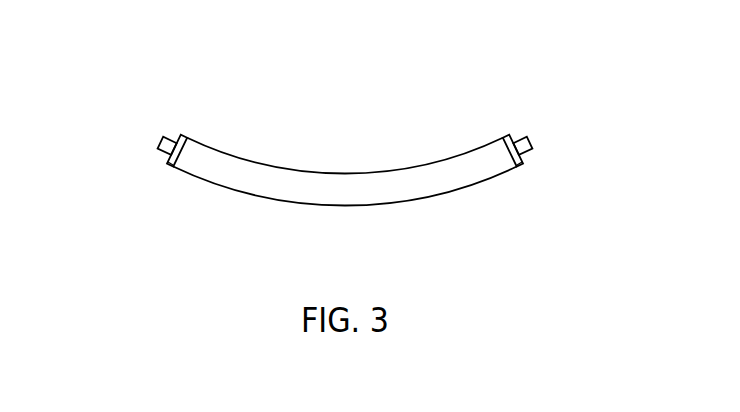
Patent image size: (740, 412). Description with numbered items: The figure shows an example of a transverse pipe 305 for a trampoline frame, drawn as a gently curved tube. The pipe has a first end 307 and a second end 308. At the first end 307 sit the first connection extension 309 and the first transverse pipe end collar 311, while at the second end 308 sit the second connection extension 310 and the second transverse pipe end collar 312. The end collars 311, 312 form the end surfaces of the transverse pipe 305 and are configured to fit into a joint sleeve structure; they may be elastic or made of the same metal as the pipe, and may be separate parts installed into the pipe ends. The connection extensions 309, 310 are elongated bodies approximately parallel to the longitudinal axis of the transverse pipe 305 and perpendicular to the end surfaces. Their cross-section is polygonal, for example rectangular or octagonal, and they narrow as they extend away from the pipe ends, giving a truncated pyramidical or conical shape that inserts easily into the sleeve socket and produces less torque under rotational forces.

The transverse pipe 305 is at (352, 171).
The first end 307 is at (184, 121).
The second end 308 is at (506, 121).
The first connection extension 309 is at (176, 136).
The second connection extension 310 is at (520, 138).
The first transverse pipe end collar 311 is at (170, 163).
The second transverse pipe end collar 312 is at (521, 166).